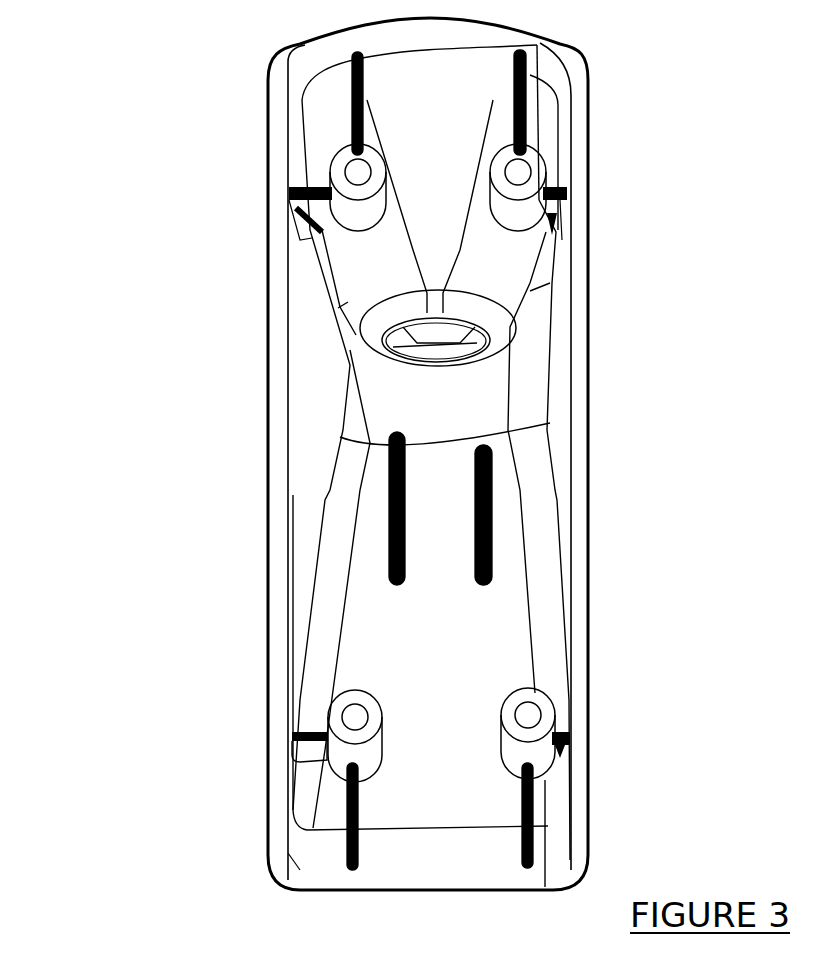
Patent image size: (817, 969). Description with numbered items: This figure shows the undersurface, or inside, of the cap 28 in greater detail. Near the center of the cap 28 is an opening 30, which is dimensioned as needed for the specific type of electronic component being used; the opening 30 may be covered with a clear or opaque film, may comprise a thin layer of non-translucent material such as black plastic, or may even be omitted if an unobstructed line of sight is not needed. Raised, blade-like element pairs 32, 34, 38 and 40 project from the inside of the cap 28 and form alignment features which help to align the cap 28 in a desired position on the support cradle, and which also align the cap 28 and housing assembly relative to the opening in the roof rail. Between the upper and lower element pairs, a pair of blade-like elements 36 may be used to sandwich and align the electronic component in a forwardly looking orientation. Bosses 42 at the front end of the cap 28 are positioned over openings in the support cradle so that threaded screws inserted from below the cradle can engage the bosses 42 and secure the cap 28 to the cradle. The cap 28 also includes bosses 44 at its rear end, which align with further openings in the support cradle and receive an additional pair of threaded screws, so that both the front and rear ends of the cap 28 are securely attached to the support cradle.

The cap 28 is at (213, 395).
The opening 30 is at (467, 323).
The blade-like element pair 32 is at (353, 128).
The blade-like element pair 34 is at (315, 214).
The blade-like elements 36 is at (393, 511).
The blade-like element pair 38 is at (555, 211).
The blade-like element pair 40 is at (353, 848).
The bosses 42 is at (343, 172).
The bosses 44 is at (343, 703).